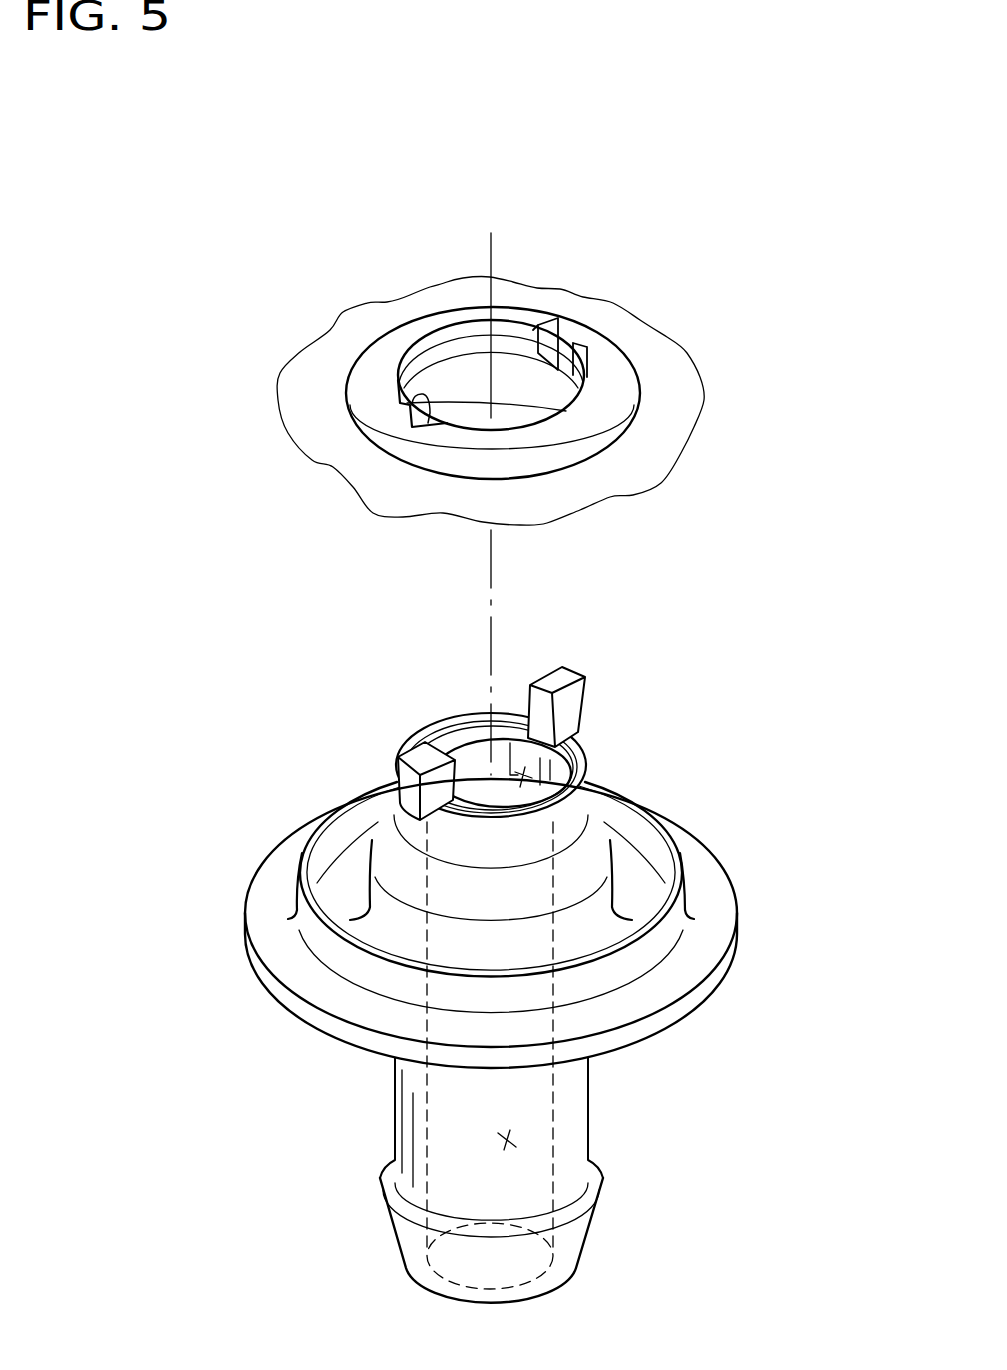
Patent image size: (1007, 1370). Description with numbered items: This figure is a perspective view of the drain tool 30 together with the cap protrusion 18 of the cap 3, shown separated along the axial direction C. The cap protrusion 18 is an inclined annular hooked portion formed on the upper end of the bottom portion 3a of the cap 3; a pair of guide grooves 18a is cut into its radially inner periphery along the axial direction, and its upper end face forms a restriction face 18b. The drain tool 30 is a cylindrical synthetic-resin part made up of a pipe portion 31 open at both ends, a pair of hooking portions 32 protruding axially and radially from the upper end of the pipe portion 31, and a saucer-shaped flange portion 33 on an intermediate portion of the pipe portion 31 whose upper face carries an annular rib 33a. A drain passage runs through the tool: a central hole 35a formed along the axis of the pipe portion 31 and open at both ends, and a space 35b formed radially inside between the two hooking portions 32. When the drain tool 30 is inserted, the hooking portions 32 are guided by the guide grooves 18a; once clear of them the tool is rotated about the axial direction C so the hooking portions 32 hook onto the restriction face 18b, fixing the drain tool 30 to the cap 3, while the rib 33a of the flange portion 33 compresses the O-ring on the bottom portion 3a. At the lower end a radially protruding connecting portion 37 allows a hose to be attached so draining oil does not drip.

The axial direction C is at (493, 258).
The cap 3 is at (538, 401).
The bottom portion 3a is at (658, 336).
The cap protrusion 18 is at (497, 357).
The guide groove 18a is at (567, 330).
The restriction face 18b is at (583, 400).
The drain tool 30 is at (531, 985).
The pipe portion 31 is at (573, 1115).
The hooking portion 32 is at (485, 743).
The flange portion 33 is at (717, 897).
The annular rib 33a is at (658, 818).
The central hole 35a is at (508, 1140).
The space 35b is at (535, 770).
The connecting portion 37 is at (570, 1243).